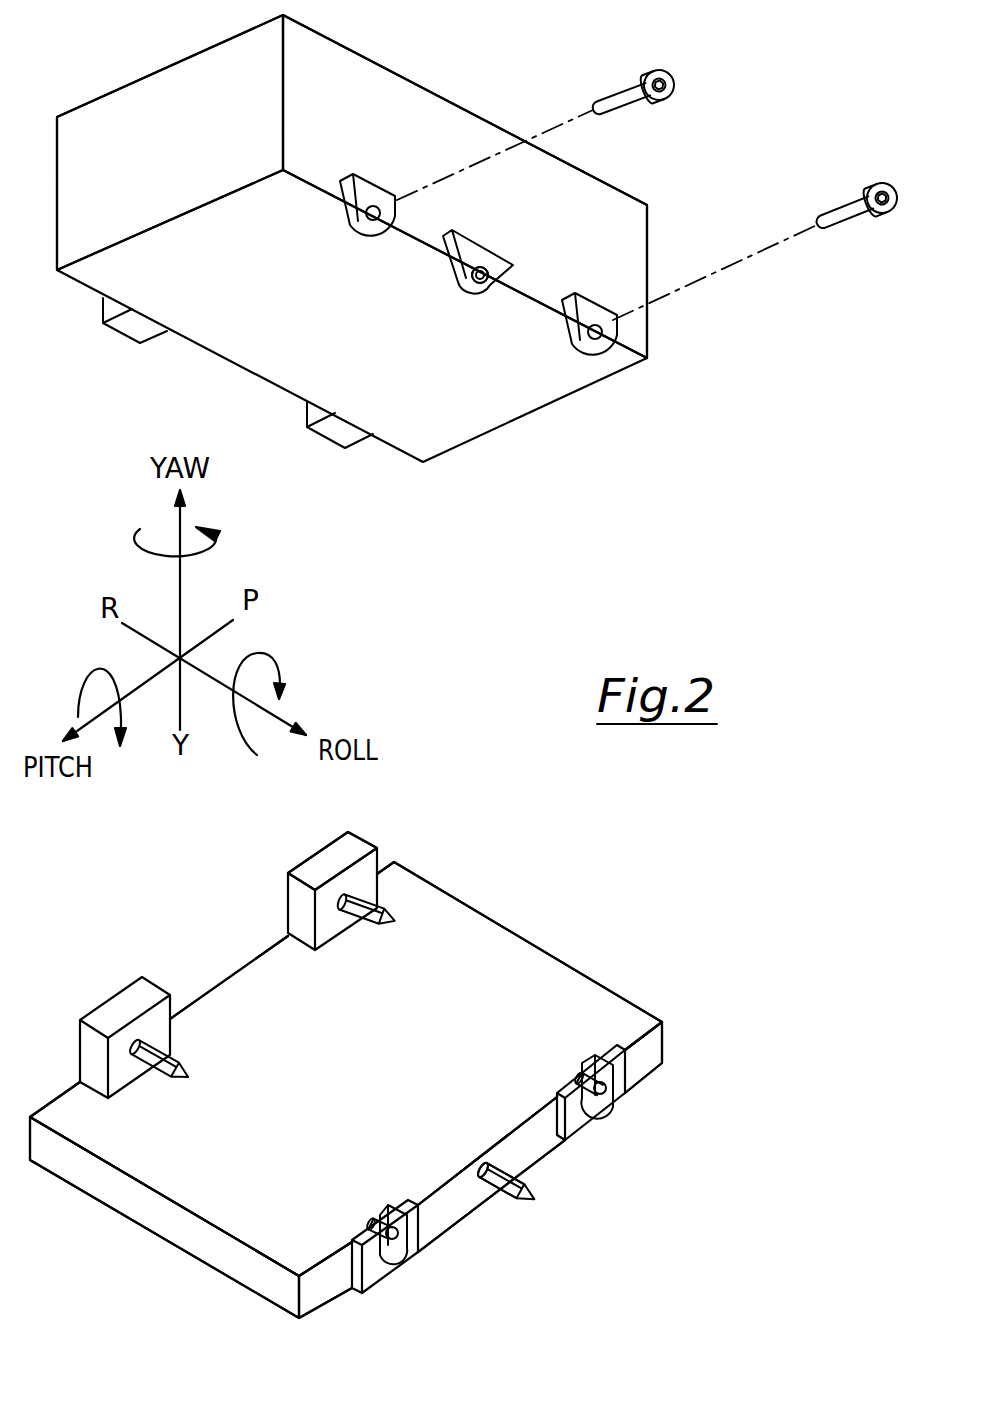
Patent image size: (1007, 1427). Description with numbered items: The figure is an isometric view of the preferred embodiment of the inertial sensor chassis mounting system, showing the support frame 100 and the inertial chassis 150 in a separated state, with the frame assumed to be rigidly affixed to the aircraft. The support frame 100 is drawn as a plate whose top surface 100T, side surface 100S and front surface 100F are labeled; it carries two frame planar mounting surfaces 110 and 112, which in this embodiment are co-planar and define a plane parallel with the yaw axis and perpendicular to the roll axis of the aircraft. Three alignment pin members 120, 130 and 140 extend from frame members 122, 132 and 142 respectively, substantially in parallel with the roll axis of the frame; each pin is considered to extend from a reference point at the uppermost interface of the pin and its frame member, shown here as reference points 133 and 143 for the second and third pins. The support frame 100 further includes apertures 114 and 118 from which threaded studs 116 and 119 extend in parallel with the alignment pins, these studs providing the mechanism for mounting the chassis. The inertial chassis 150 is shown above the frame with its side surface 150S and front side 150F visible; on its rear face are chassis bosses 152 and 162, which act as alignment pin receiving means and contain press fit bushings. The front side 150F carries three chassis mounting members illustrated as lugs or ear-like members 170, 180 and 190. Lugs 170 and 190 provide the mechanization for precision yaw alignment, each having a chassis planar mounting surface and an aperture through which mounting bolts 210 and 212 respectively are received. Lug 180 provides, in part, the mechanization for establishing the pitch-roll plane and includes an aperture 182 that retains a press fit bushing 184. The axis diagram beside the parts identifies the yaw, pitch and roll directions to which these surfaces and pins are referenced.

The support frame 100 is at (584, 964).
The top surface of plate 100T is at (385, 1126).
The side surface of plate 100S is at (77, 1170).
The front surface of plate 100F is at (320, 1293).
The frame planar mounting surface 110 is at (412, 1248).
The frame planar mounting surface 112 is at (623, 1105).
The aperture 114 is at (400, 1263).
The threaded stud 116 is at (376, 1220).
The aperture 118 is at (593, 1107).
The threaded stud 119 is at (582, 1088).
The alignment pin member 120 is at (188, 1058).
The frame member 122 is at (127, 1000).
The alignment pin member 130 is at (368, 932).
The frame member 132 is at (337, 856).
The reference point 133 is at (338, 858).
The alignment pin member 140 is at (542, 1187).
The frame member 142 is at (467, 1187).
The reference point 143 is at (493, 1162).
The inertial chassis 150 is at (533, 411).
The side surface of housing 150S is at (226, 83).
The front side 150F is at (342, 97).
The chassis boss 152 is at (123, 335).
The chassis boss 162 is at (323, 442).
The lug 170 is at (348, 230).
The lug 180 is at (463, 289).
The aperture 182 is at (480, 268).
The press fit bushing 184 is at (492, 278).
The lug 190 is at (597, 353).
The mounting bolt 210 is at (675, 103).
The mounting bolt 212 is at (868, 188).